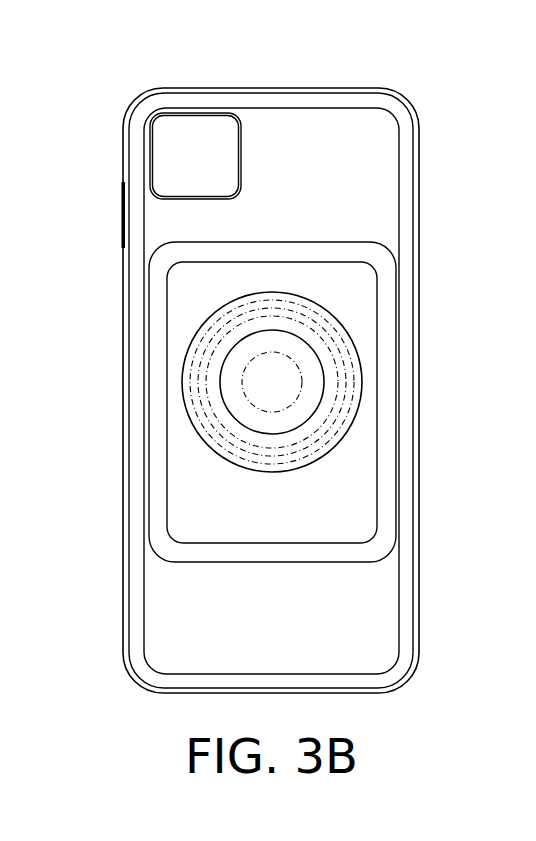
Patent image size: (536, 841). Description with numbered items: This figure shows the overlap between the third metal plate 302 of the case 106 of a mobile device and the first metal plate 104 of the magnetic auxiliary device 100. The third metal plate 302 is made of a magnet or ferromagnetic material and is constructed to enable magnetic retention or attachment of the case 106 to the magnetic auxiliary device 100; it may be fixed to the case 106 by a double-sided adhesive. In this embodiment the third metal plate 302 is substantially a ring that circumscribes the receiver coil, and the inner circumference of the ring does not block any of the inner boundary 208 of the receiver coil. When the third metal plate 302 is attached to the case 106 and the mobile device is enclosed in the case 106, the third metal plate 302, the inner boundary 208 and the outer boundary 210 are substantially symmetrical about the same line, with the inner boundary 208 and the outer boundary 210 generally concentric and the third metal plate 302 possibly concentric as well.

The magnetic auxiliary device 100 is at (325, 245).
The case 106 is at (278, 125).
The first metal plate 104 is at (195, 338).
The third metal plate 302 is at (338, 340).
The outer boundary 210 is at (208, 431).
The inner boundary 208 is at (242, 387).